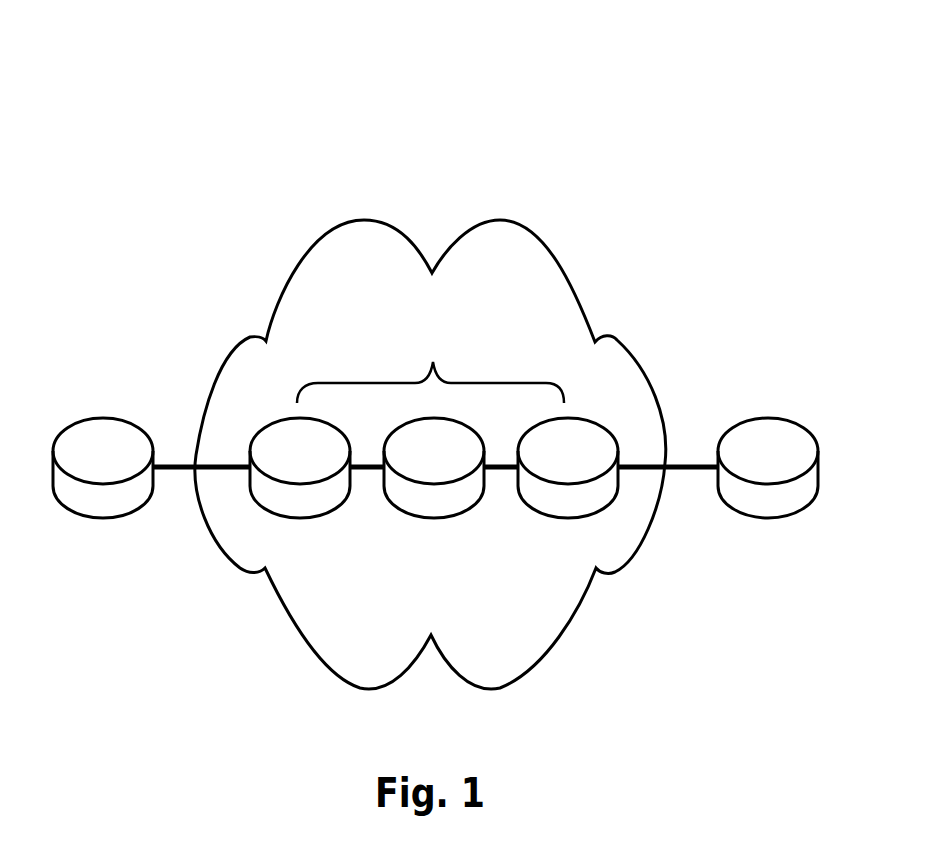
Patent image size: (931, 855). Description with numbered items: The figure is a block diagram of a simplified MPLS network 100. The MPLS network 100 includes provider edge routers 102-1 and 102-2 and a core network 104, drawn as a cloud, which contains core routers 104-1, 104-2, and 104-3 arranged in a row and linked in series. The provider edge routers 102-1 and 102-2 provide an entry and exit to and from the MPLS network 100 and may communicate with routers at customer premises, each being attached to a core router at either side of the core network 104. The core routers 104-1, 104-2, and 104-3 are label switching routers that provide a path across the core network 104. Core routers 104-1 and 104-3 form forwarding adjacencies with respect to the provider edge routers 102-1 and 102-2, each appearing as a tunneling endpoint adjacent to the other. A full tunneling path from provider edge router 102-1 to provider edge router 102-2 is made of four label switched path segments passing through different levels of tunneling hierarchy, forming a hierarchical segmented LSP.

The MPLS network 100 is at (445, 106).
The core network 104 is at (364, 220).
The provider edge router 102-1 is at (109, 455).
The provider edge router 102-2 is at (765, 455).
The core router 104-1 is at (300, 468).
The core router 104-2 is at (434, 468).
The core router 104-3 is at (568, 468).